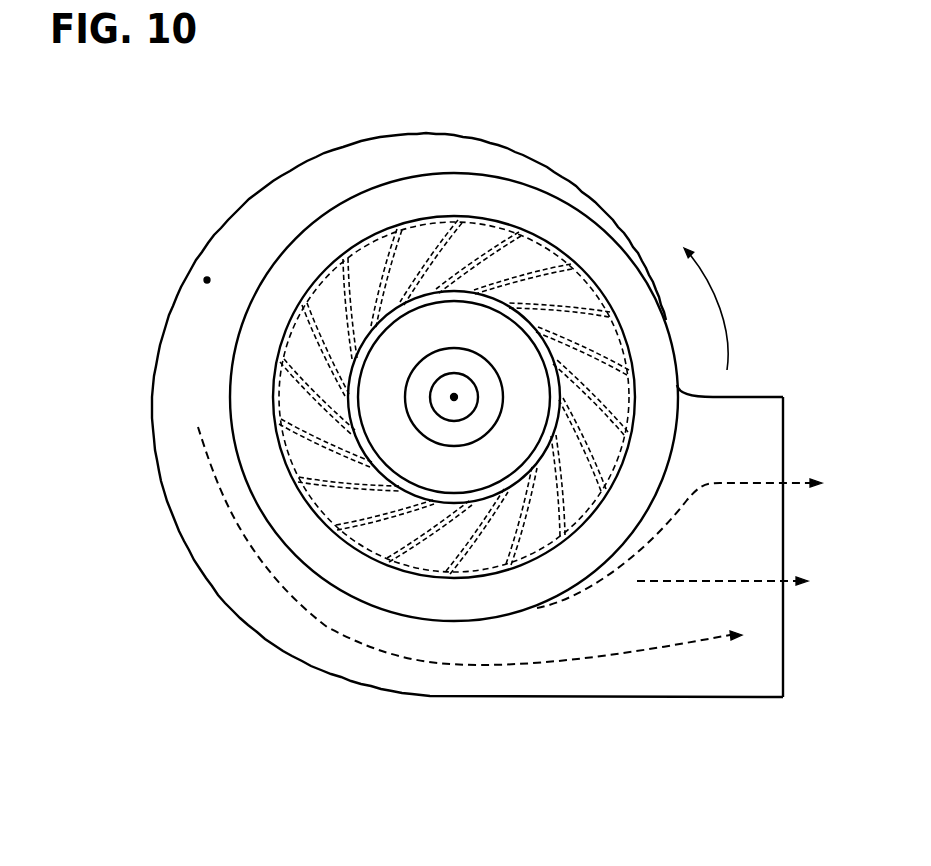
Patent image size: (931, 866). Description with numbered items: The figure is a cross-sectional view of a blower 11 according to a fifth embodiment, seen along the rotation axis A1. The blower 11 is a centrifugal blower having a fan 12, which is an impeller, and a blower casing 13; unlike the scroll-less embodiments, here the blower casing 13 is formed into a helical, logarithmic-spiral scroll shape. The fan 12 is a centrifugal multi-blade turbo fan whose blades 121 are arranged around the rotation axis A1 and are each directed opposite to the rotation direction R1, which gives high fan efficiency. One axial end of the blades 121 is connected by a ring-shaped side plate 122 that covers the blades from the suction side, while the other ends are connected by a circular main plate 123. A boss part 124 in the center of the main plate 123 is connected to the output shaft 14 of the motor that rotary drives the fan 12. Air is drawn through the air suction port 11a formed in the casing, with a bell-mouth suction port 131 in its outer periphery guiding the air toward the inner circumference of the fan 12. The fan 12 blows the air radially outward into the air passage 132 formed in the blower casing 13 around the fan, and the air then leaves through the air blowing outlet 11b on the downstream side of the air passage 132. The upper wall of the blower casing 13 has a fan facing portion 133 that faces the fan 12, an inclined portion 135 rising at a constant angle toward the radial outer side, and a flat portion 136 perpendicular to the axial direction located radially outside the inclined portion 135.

The blower 11 is at (454, 410).
The air suction port 11a is at (378, 472).
The air blowing outlet 11b is at (783, 553).
The fan 12 is at (350, 410).
The blades 121 is at (367, 248).
The side plate 122 is at (323, 320).
The main plate 123 is at (440, 468).
The boss part 124 is at (475, 422).
The blower casing 13 is at (250, 632).
The suction port 131 is at (420, 490).
The air passage 132 is at (207, 280).
The fan facing portion 133 is at (313, 480).
The inclined portion 135 is at (247, 370).
The flat portion 136 is at (203, 317).
The output shaft 14 is at (443, 387).
The rotation axis A1 is at (454, 394).
The rotation direction R1 is at (723, 280).